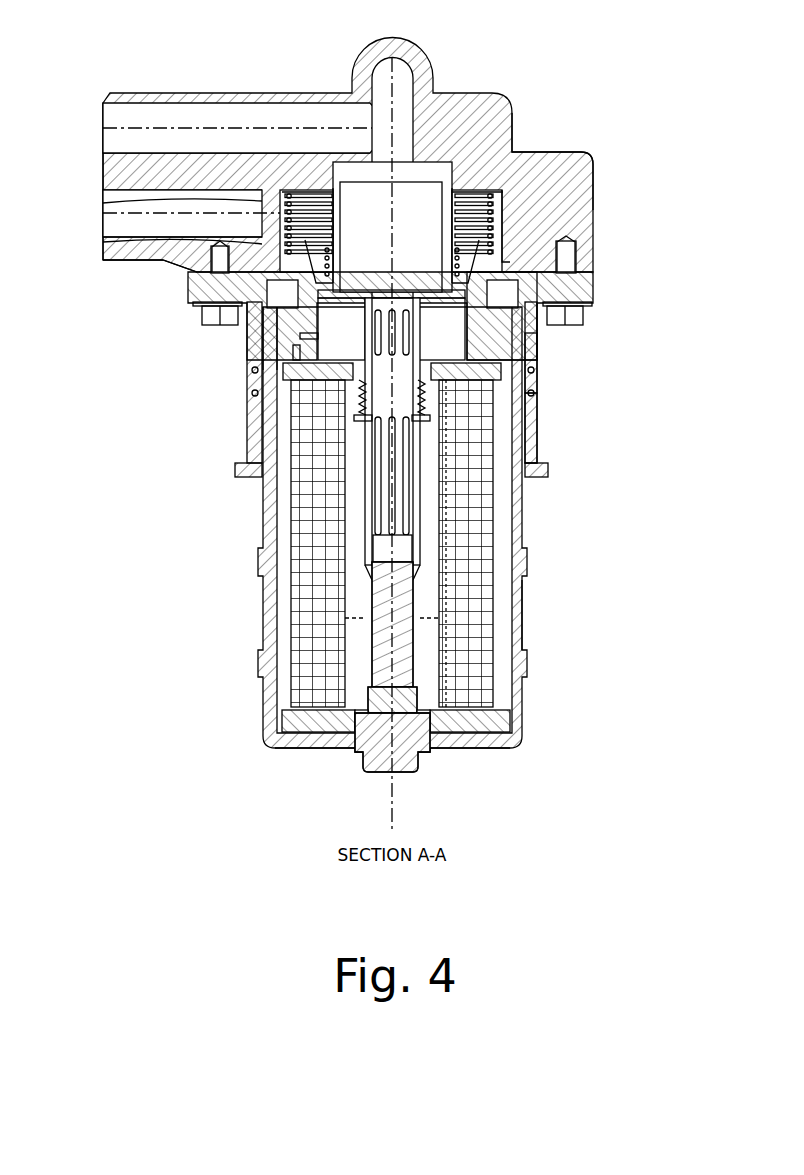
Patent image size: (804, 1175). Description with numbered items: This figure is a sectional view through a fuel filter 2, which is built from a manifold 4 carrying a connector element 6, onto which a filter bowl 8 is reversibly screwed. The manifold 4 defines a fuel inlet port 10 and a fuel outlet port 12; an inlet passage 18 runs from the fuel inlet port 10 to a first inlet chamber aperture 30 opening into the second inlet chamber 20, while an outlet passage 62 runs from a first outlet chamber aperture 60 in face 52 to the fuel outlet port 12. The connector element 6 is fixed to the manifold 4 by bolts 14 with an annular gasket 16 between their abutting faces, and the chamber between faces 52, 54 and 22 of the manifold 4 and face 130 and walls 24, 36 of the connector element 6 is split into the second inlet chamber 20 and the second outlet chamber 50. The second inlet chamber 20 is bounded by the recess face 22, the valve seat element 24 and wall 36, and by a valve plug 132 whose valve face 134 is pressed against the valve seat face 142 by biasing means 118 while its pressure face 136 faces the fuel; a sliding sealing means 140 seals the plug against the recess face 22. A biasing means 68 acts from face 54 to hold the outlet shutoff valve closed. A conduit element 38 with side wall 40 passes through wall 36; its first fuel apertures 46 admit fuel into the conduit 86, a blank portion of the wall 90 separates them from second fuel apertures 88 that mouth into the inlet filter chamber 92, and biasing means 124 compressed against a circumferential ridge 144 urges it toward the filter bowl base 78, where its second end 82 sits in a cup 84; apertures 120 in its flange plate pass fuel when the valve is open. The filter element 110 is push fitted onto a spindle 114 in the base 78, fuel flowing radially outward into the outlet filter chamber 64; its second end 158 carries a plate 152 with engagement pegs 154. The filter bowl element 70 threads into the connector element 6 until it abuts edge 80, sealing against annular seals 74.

The fuel filter 2 is at (550, 622).
The manifold 4 is at (516, 99).
The connector element 6 is at (602, 289).
The filter bowl 8 is at (526, 593).
The fuel inlet port 10 is at (103, 113).
The fuel outlet port 12 is at (103, 190).
The bolts 14 is at (206, 317).
The annular gasket 16 is at (197, 271).
The inlet passage 18 is at (247, 128).
The second inlet chamber 20 is at (391, 271).
The recess face 22 is at (440, 152).
The valve seat element 24 is at (262, 337).
The first inlet chamber aperture 30 is at (410, 135).
The wall 36 is at (515, 346).
The conduit element 38 is at (424, 562).
The side wall 40 is at (374, 292).
The first fuel apertures 46 is at (322, 376).
The second outlet chamber 50 is at (103, 243).
The face 52 is at (163, 259).
The face 54 is at (272, 190).
The first outlet chamber aperture 60 is at (108, 202).
The outlet passage 62 is at (197, 213).
The outlet filter chamber 64 is at (291, 638).
The biasing means 68 is at (505, 195).
The filter bowl element 70 is at (528, 457).
The annular seals 74 is at (535, 392).
The filter bowl base 78 is at (468, 750).
The edge 80 is at (540, 470).
The second end 82 is at (384, 720).
The cup 84 is at (445, 710).
The conduit 86 is at (392, 422).
The second fuel apertures 88 is at (365, 523).
The blank portion of the wall 90 is at (362, 420).
The inlet filter chamber 92 is at (391, 606).
The filter element 110 is at (480, 662).
The spindle 114 is at (358, 718).
The biasing means 118 is at (326, 205).
The apertures 120 is at (432, 292).
The biasing means 124 is at (360, 398).
The face 130 is at (216, 262).
The valve plug 132 is at (568, 160).
The valve face 134 is at (505, 256).
The pressure face 136 is at (442, 329).
The sliding sealing means 140 is at (515, 151).
The valve seat face 142 is at (576, 258).
The circumferential ridge 144 is at (530, 432).
The plate 152 is at (296, 358).
The engagement pegs 154 is at (300, 340).
The second end 158 is at (500, 392).